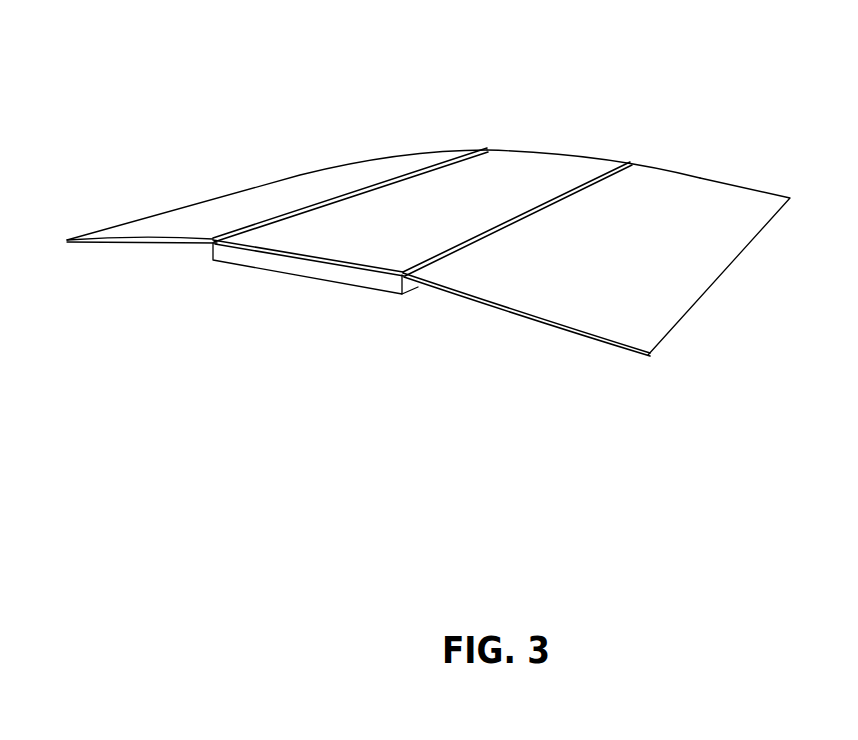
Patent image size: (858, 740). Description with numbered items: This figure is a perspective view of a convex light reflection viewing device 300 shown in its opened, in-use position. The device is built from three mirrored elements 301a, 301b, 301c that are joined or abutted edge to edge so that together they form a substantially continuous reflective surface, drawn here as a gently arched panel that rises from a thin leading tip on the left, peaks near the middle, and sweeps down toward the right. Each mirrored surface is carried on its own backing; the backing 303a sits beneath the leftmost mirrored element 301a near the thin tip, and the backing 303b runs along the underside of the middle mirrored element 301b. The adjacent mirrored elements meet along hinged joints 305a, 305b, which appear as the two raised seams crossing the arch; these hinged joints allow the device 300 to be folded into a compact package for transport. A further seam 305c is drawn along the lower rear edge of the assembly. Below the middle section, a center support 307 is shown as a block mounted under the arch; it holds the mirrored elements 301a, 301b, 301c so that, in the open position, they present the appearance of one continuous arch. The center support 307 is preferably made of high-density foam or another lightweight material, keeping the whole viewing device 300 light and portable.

The convex light reflection viewing device 300 is at (454, 260).
The mirrored element 301a is at (430, 152).
The mirrored element 301b is at (563, 153).
The mirrored element 301c is at (737, 183).
The backing 303a is at (127, 243).
The backing 303b is at (270, 253).
The hinged joint 305a is at (307, 202).
The hinged joint 305b is at (438, 260).
The third ridge 305c is at (537, 322).
The center support 307 is at (340, 283).